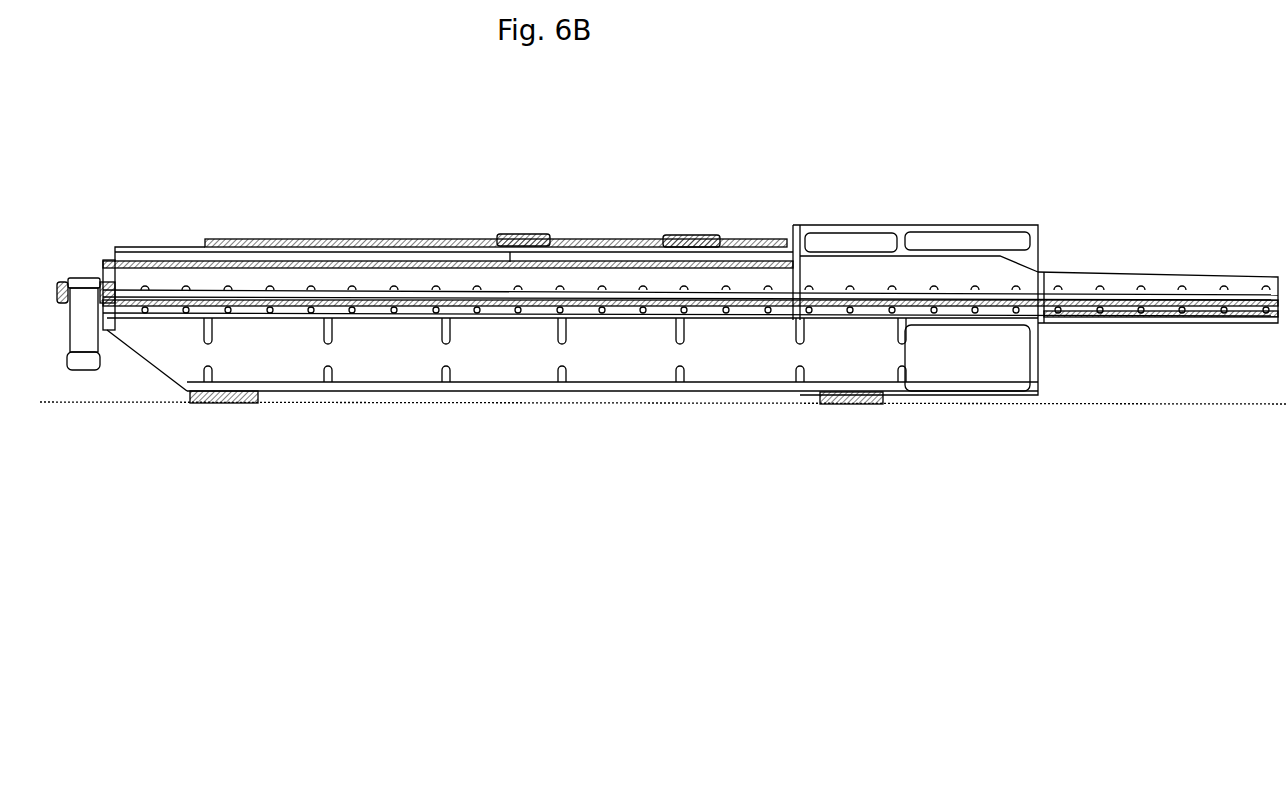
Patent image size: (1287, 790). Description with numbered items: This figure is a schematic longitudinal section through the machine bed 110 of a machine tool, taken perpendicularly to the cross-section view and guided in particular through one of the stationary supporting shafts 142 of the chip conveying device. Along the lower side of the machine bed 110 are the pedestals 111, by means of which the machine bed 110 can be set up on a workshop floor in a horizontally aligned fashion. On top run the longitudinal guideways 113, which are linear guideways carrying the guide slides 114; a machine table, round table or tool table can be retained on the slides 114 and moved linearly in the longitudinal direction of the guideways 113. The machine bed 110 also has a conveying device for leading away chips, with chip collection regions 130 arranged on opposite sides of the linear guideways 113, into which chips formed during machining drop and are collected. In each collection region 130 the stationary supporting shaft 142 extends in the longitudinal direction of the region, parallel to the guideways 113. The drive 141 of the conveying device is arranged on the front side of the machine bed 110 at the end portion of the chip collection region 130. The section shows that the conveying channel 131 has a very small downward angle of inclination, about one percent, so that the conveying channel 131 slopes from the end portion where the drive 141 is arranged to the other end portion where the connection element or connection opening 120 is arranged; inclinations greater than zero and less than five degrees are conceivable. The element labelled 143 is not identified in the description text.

The machine bed 110 is at (731, 383).
The pedestals 111 is at (230, 404).
The longitudinal guideways 113 is at (381, 240).
The guide slides 114 is at (692, 238).
The connection opening 120 is at (1105, 270).
The chip collection regions 130 is at (448, 277).
The conveying channel 131 is at (588, 315).
The drives 141 is at (83, 340).
The stationary supporting shaft 142 is at (510, 303).
The corrugated spring layer 143 is at (270, 283).